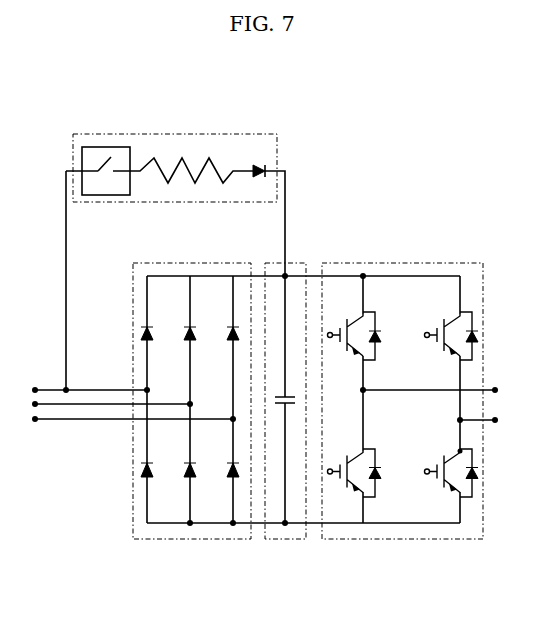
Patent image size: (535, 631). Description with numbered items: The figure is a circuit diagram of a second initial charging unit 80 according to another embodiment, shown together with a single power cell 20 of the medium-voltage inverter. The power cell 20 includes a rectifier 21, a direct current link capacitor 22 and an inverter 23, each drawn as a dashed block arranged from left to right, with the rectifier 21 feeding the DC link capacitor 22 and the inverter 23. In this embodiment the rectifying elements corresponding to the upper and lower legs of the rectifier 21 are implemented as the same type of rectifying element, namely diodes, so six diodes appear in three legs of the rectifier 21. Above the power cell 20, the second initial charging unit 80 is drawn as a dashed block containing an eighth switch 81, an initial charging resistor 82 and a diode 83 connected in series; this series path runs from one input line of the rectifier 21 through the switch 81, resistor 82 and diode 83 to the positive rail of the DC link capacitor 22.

The power cell 20 is at (378, 108).
The rectifier 21 is at (190, 540).
The direct current (DC) link capacitor 22 is at (285, 540).
The inverter 23 is at (400, 540).
The second initial charging unit 80 is at (157, 133).
The eighth switch 81 is at (104, 145).
The initial charging resistor 82 is at (208, 157).
The diode 83 is at (252, 166).